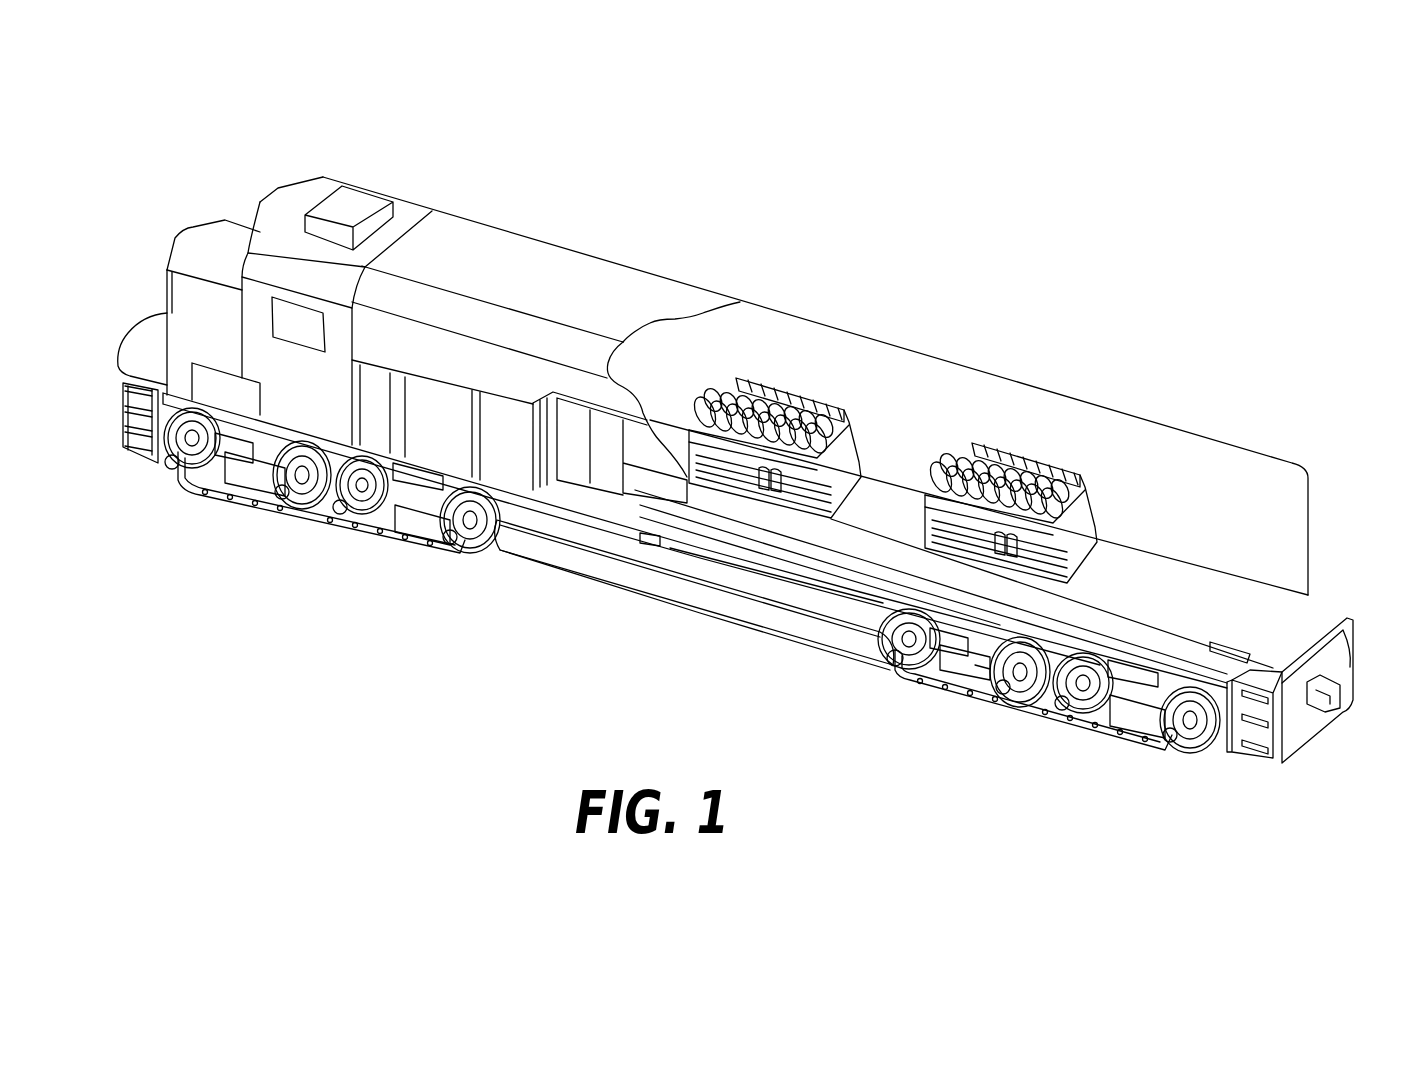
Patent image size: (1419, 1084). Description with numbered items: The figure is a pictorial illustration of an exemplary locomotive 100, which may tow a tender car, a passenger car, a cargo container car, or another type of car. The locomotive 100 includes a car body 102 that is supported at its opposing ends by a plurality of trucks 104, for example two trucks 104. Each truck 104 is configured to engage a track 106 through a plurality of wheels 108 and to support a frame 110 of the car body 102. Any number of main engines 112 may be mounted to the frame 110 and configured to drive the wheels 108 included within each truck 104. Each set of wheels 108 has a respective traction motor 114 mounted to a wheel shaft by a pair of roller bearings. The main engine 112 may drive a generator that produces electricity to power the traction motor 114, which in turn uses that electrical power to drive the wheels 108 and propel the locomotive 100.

The locomotive 100 is at (1062, 266).
The car body 102 is at (652, 287).
The truck 104 is at (457, 580).
The track 106 is at (502, 560).
The wheel 108 is at (472, 548).
The frame 110 is at (1322, 610).
The main engine 112 is at (850, 425).
The traction motor 114 is at (258, 453).